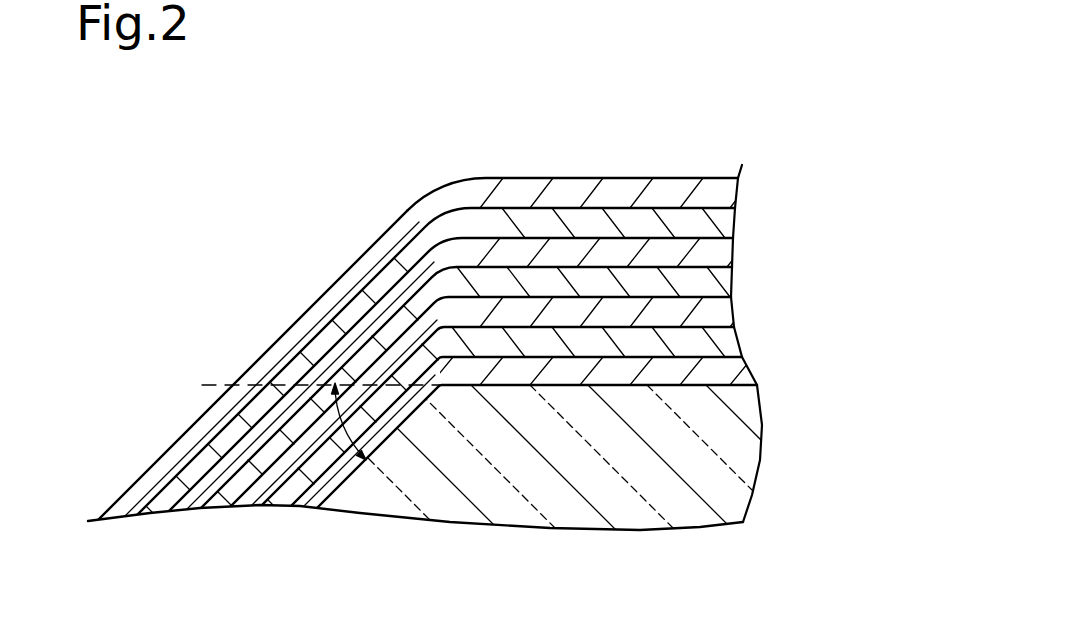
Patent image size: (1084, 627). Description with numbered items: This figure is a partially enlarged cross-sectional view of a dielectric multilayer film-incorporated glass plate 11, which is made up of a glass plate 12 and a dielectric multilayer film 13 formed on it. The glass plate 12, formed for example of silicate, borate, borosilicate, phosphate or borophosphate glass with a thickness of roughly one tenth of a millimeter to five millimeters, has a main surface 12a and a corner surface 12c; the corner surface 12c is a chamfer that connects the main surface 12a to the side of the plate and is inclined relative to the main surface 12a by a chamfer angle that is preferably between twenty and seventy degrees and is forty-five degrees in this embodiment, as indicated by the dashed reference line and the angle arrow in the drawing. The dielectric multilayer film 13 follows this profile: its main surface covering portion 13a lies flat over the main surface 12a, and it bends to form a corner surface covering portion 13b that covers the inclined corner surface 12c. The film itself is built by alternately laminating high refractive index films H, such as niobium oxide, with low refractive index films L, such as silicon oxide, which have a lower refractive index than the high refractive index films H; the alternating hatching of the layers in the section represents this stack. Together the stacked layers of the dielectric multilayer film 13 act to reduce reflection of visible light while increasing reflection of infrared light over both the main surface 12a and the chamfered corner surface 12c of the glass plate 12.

The dielectric multilayer film-incorporated glass plate 11 is at (316, 210).
The glass plate 12 is at (763, 420).
The main surface 12a is at (667, 384).
The corner surface 12c is at (326, 497).
The dielectric multilayer film 13 is at (708, 177).
The main surface covering portion 13a is at (607, 177).
The corner surface covering portion 13b is at (148, 469).
The high refractive index film H is at (742, 216).
The low refractive index film L is at (742, 262).